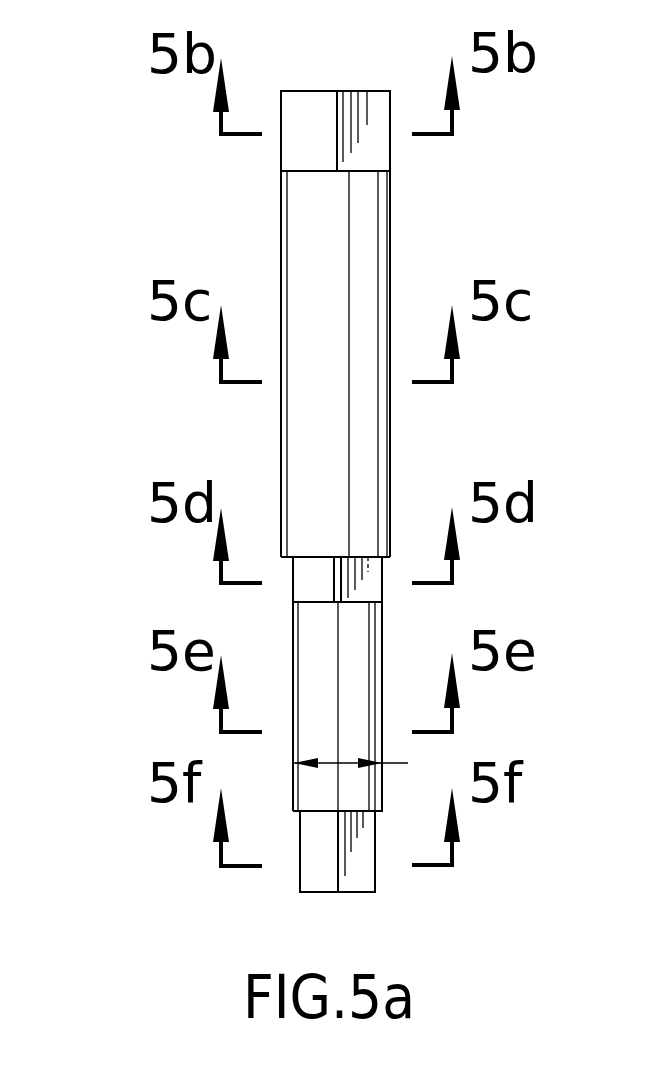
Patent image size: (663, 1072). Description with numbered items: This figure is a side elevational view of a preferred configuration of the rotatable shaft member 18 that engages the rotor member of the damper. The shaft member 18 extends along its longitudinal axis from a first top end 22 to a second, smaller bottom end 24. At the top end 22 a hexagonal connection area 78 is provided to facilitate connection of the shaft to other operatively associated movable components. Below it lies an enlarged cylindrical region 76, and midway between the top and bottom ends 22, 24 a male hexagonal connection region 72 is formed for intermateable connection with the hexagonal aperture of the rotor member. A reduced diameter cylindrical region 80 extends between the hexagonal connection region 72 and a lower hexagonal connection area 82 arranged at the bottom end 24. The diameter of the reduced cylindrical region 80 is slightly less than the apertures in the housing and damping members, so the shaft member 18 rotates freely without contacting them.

The shaft member 18 is at (338, 510).
The first top end 22 is at (408, 150).
The second smaller bottom end 24 is at (367, 743).
The male hexagonal connection region 72 is at (320, 592).
The enlarged cylindrical region 76 is at (360, 467).
The hexagonal connection area 78 is at (315, 162).
The reduced diameter cylindrical region 80 is at (317, 787).
The lower hexagonal connection area 82 is at (312, 880).